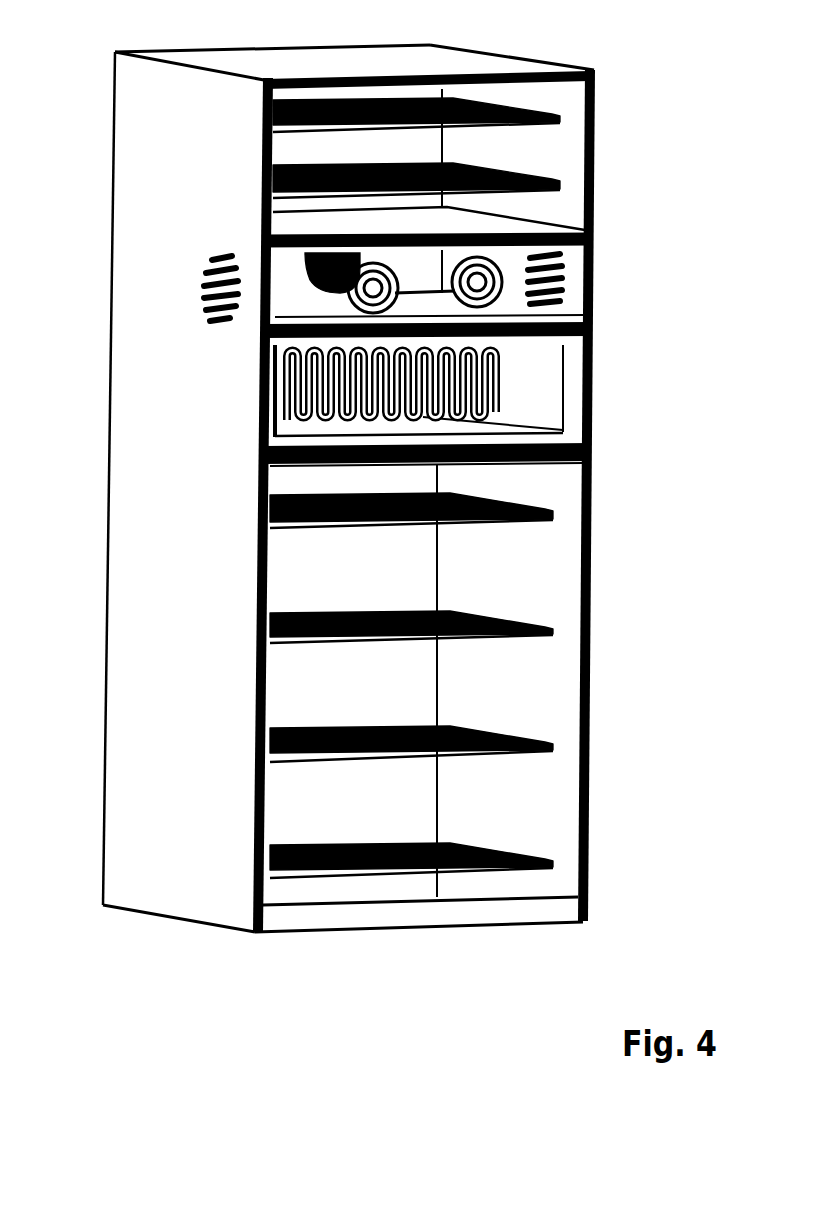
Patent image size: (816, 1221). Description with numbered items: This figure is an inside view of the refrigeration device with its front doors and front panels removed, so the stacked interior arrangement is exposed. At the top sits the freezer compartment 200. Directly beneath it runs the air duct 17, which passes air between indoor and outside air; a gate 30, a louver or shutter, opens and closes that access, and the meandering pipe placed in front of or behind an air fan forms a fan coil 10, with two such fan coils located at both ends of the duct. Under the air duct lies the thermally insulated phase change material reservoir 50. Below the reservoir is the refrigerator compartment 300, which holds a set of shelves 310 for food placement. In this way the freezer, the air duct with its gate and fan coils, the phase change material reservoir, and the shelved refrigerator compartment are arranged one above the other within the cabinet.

The freezer compartment 200 is at (355, 148).
The gates 30 is at (200, 283).
The air duct 17 is at (297, 283).
The fan coil 10 is at (503, 270).
The phase change material reservoir 50 is at (517, 382).
The refrigerator compartment 300 is at (347, 556).
The shelves 310 is at (260, 752).